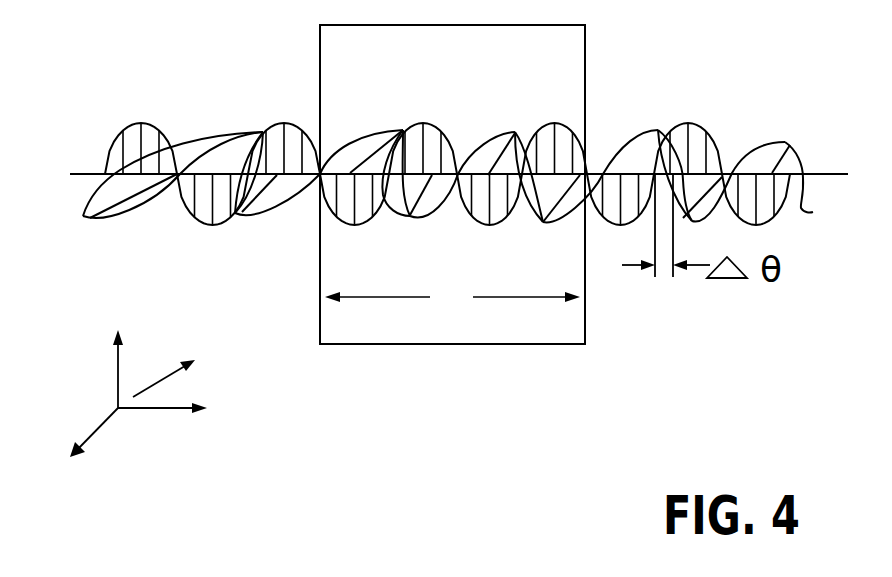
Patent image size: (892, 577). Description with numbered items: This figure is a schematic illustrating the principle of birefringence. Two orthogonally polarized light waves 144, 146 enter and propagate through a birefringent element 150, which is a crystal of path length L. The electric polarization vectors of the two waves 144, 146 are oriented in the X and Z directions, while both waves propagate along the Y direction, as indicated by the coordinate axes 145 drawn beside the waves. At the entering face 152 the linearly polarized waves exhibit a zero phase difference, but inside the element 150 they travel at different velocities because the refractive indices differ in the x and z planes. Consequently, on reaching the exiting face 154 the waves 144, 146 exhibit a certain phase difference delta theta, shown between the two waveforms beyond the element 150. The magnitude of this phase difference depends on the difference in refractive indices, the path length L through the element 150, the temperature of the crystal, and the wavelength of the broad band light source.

The orthogonally polarized wave 144 is at (113, 140).
The coordinate axes / propagation direction 145 is at (186, 366).
The orthogonally polarized wave 146 is at (127, 215).
The birefringent element 150 is at (585, 320).
The entering face 152 is at (319, 78).
The exiting face 154 is at (585, 93).